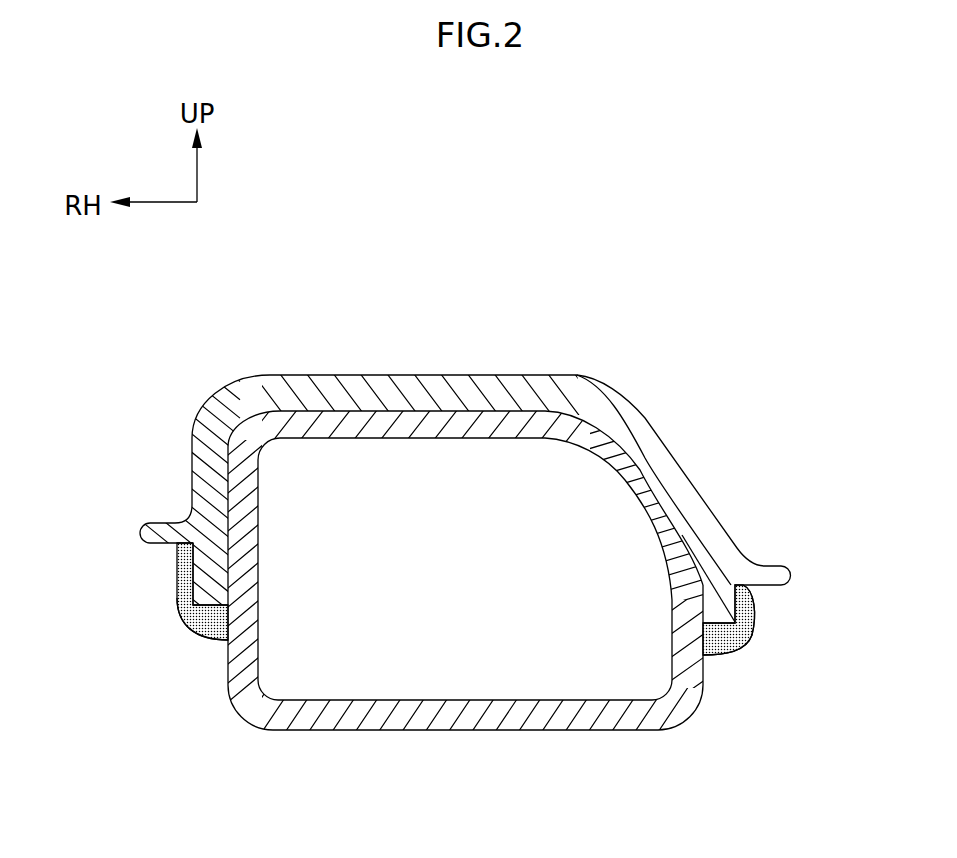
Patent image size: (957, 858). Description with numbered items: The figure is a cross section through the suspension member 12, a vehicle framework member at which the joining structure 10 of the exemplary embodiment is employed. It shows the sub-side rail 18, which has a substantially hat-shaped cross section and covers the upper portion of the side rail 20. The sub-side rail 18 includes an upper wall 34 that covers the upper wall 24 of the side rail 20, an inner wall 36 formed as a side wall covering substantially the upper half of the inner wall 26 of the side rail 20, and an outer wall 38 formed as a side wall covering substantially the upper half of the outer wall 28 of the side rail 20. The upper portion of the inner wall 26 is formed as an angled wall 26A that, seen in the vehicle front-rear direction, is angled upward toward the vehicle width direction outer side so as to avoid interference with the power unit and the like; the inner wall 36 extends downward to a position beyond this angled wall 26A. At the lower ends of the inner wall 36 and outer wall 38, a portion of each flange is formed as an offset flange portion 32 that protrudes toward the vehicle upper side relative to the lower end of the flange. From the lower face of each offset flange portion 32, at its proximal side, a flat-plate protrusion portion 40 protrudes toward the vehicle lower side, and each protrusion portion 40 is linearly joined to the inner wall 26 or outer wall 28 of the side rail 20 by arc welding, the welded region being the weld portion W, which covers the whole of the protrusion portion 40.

The joining structure 10 is at (156, 578).
The suspension member 12 is at (360, 305).
The sub-side rail 18 is at (428, 366).
The side rail 20 is at (416, 746).
The upper wall of the side rail 24 is at (420, 430).
The inner wall of the side rail 26 is at (668, 599).
The angled wall 26A is at (614, 481).
The outer wall of the side rail 28 is at (248, 566).
The offset flange portion 32 is at (142, 535).
The upper wall of the sub-side rail 34 is at (497, 384).
The inner wall of the sub-side rail 36 is at (712, 512).
The outer wall of the sub-side rail 38 is at (200, 477).
The protrusion portion 40 is at (208, 632).
The weld portion W is at (212, 600).